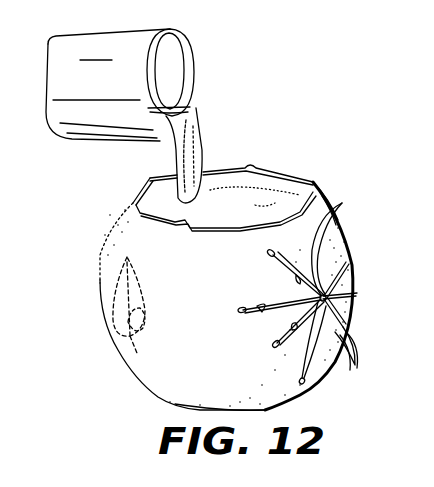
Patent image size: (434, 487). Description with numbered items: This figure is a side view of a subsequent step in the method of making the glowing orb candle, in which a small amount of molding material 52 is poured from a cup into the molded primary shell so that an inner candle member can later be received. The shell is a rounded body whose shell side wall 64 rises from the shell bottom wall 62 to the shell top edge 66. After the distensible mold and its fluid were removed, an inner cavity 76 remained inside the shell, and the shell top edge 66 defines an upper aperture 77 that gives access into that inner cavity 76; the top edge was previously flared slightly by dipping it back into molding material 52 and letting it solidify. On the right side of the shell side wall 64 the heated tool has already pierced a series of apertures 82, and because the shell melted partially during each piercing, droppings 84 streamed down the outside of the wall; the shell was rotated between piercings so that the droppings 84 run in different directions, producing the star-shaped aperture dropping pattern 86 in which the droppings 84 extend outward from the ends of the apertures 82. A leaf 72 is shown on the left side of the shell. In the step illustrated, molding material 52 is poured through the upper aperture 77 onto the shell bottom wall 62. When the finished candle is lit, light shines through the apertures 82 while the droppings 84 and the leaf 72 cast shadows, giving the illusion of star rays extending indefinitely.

The molding material 52 is at (192, 132).
The shell bottom wall 62 is at (230, 403).
The shell side wall 64 is at (147, 254).
The shell top edge 66 is at (315, 190).
The leaf 72 is at (118, 292).
The inner cavity 76 is at (263, 202).
The upper aperture 77 is at (243, 180).
The apertures 82 is at (355, 366).
The droppings 84 is at (342, 203).
The aperture dropping pattern 86 is at (358, 276).